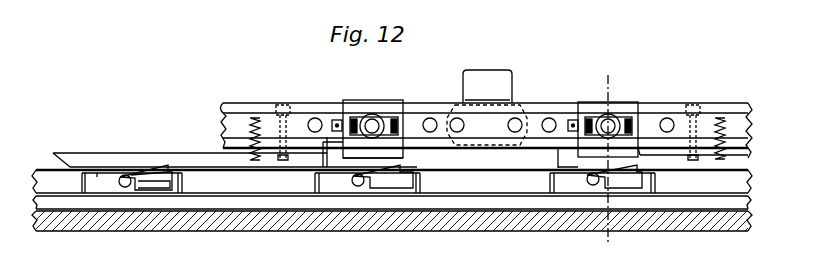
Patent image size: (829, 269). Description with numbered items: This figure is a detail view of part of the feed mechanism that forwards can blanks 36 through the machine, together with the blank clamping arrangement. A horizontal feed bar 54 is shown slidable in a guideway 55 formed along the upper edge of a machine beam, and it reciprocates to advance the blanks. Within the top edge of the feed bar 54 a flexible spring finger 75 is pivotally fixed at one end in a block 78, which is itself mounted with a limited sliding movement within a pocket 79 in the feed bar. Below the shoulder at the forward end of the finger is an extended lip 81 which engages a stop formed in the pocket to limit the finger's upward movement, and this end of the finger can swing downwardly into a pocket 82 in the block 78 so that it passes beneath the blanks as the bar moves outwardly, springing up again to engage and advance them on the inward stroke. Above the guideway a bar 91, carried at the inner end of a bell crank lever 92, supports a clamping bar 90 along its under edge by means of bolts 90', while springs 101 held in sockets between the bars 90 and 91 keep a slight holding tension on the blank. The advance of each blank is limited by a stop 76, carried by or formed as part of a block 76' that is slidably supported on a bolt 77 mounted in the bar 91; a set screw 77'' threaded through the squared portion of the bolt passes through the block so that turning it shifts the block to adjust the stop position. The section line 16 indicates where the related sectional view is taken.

The section line / axis 16 is at (607, 160).
The can blank 36 is at (232, 158).
The feed bar 54 is at (443, 196).
The guideway 55 is at (500, 196).
The spring finger 75 is at (145, 172).
The stop 76 is at (404, 202).
The block 76' is at (601, 113).
The bolt 77 is at (637, 102).
The set screw 77'' is at (521, 108).
The block 78 is at (103, 176).
The pocket 79 is at (186, 183).
The lip 81 is at (183, 170).
The pocket 82 is at (160, 192).
The clamping bar 90 is at (238, 122).
The bolt 90' is at (490, 96).
The bar 91 is at (236, 110).
The bell crank lever 92 is at (498, 70).
The spring 101 is at (277, 105).